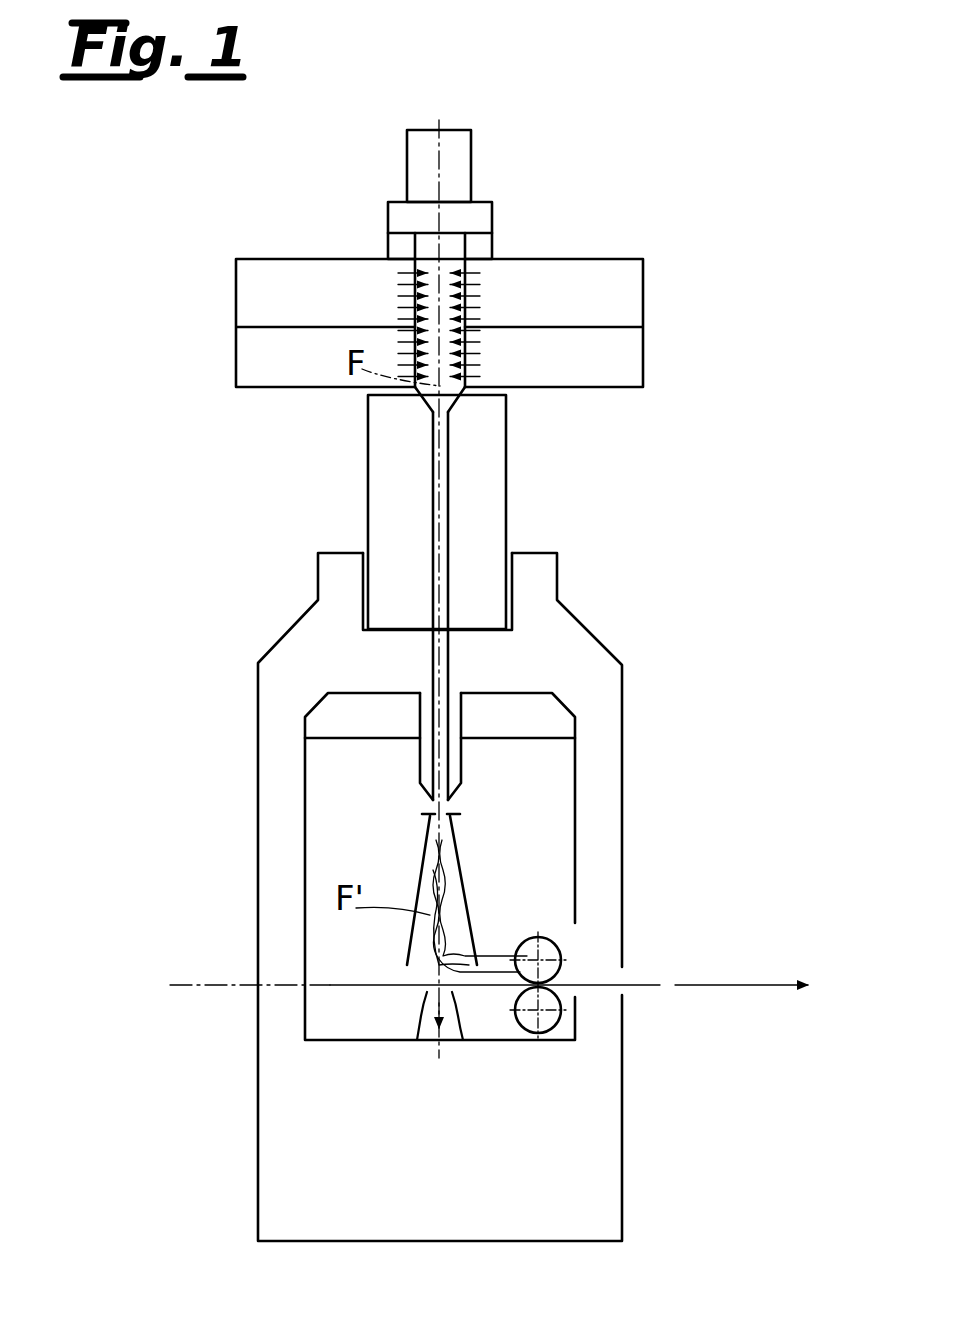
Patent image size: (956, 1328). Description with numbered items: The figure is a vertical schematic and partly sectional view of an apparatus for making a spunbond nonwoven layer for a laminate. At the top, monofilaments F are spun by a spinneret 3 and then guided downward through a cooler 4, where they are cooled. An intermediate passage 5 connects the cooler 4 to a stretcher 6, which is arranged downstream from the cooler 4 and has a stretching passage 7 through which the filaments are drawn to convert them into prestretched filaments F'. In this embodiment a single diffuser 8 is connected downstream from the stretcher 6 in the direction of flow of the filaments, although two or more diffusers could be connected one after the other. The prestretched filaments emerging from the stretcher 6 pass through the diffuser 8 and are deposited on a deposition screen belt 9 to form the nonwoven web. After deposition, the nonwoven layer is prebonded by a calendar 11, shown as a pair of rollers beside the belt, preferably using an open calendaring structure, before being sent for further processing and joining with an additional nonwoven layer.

The spinneret 3 is at (416, 130).
The cooler 4 is at (478, 273).
The intermediate passage 5 is at (460, 498).
The stretcher 6 is at (503, 705).
The stretching passage 7 is at (413, 725).
The diffuser 8 is at (468, 865).
The deposition screen belt 9 is at (725, 980).
The calendar 11 is at (567, 942).